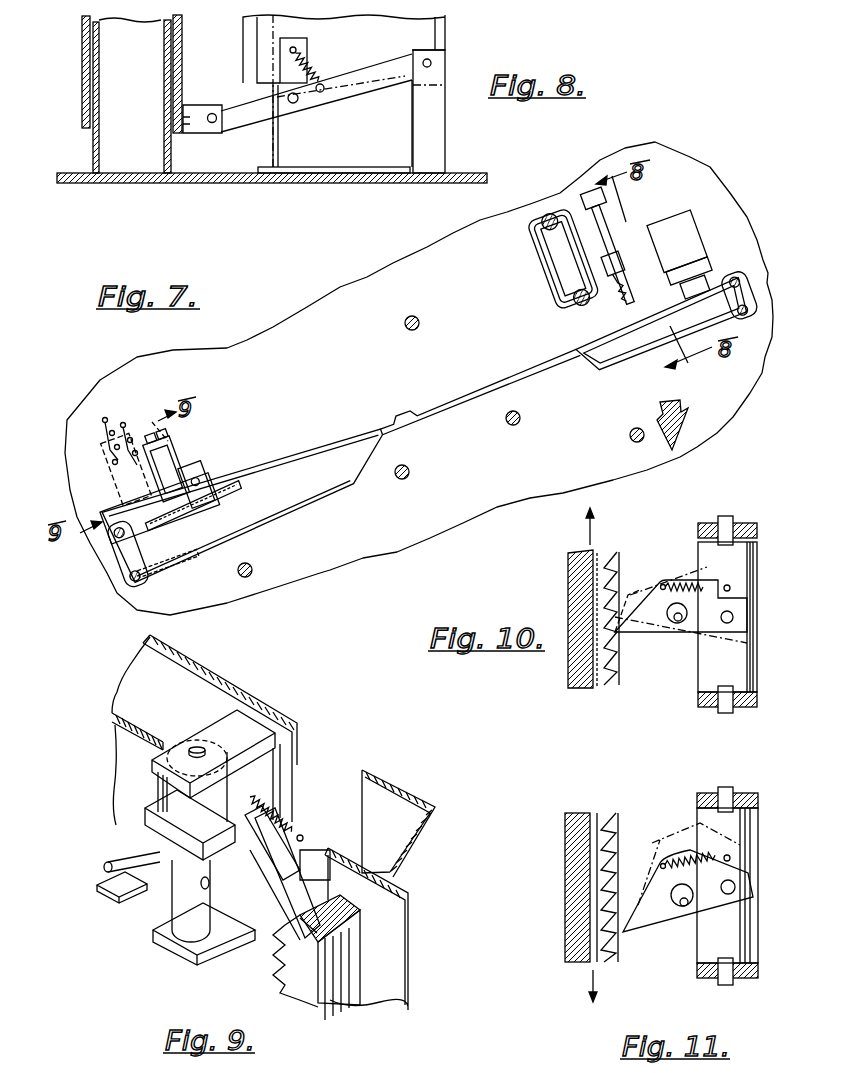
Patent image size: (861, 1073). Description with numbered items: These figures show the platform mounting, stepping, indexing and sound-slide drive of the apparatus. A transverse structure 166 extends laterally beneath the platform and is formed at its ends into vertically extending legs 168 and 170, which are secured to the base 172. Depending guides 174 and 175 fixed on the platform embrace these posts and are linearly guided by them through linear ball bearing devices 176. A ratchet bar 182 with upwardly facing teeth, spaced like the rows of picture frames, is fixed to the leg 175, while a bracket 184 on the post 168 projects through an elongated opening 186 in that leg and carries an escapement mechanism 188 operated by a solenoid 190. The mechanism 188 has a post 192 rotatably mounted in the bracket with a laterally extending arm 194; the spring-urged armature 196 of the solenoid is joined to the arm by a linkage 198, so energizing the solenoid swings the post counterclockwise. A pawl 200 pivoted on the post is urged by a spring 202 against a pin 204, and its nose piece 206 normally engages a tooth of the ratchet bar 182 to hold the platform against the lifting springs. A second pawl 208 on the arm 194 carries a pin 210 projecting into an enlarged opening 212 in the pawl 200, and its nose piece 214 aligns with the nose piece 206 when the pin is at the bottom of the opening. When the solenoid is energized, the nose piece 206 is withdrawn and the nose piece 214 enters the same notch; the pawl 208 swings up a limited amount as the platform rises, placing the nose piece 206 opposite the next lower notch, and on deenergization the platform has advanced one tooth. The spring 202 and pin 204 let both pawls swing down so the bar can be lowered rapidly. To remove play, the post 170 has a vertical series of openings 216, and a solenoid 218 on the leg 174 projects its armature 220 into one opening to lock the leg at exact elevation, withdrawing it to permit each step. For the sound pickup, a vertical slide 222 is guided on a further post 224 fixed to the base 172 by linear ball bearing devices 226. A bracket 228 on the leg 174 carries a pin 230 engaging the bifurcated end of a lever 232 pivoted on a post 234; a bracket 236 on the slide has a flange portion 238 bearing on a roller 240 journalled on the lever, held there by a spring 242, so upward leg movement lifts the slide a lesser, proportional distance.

In FIG. 7, the transverse structure 166 is at (450, 402).
In FIG. 7, the leg 168 is at (240, 530).
In FIG. 9, the leg 168 is at (405, 817).
In FIG. 8, the leg 170 is at (93, 142).
In FIG. 7, the leg 170 is at (588, 366).
In FIG. 8, the base 172 is at (228, 183).
In FIG. 7, the base 172 is at (376, 353).
In FIG. 8, the guide 174 is at (83, 66).
In FIG. 7, the guide 174 is at (650, 365).
In FIG. 7, the guide 175 is at (150, 577).
In FIG. 9, the guide 175 is at (395, 982).
In FIG. 7, the linear ball bearing devices 176 is at (117, 560).
In FIG. 7, the ratchet bar 182 is at (147, 522).
In FIG. 10, the ratchet bar 182 is at (570, 567).
In FIG. 11, the ratchet bar 182 is at (573, 840).
In FIG. 9, the ratchet bar 182 is at (300, 1010).
In FIG. 7, the bracket 184 is at (215, 487).
In FIG. 10, the bracket 184 is at (747, 523).
In FIG. 11, the bracket 184 is at (745, 793).
In FIG. 9, the bracket 184 is at (218, 732).
In FIG. 9, the elongated opening 186 is at (313, 850).
In FIG. 7, the escapement mechanism 188 is at (212, 458).
In FIG. 9, the escapement mechanism 188 is at (133, 821).
In FIG. 7, the solenoid 190 is at (112, 473).
In FIG. 10, the post 192 is at (750, 558).
In FIG. 11, the post 192 is at (758, 818).
In FIG. 9, the post 192 is at (143, 818).
In FIG. 7, the arm 194 is at (187, 463).
In FIG. 9, the arm 194 is at (104, 866).
In FIG. 7, the armature 196 is at (150, 450).
In FIG. 7, the linkage 198 is at (180, 443).
In FIG. 9, the linkage 198 is at (110, 897).
In FIG. 10, the pawl 200 is at (745, 633).
In FIG. 11, the pawl 200 is at (757, 897).
In FIG. 9, the pawl 200 is at (290, 830).
In FIG. 10, the spring 202 is at (705, 582).
In FIG. 11, the spring 202 is at (682, 858).
In FIG. 9, the spring 202 is at (280, 817).
In FIG. 10, the pin 204 is at (733, 593).
In FIG. 11, the pin 204 is at (730, 862).
In FIG. 9, the pin 204 is at (250, 783).
In FIG. 10, the nose piece 206 is at (628, 637).
In FIG. 11, the nose piece 206 is at (643, 907).
In FIG. 9, the nose piece 206 is at (277, 887).
In FIG. 10, the second pawl 208 is at (673, 570).
In FIG. 11, the second pawl 208 is at (700, 823).
In FIG. 9, the second pawl 208 is at (183, 890).
In FIG. 10, the pin 210 is at (670, 623).
In FIG. 11, the pin 210 is at (682, 910).
In FIG. 9, the pin 210 is at (210, 850).
In FIG. 10, the opening 212 is at (683, 627).
In FIG. 11, the opening 212 is at (692, 897).
In FIG. 9, the opening 212 is at (210, 832).
In FIG. 10, the nose piece 214 is at (628, 590).
In FIG. 9, the nose piece 214 is at (270, 935).
In FIG. 7, the openings 216 is at (667, 310).
In FIG. 7, the solenoid 218 is at (709, 241).
In FIG. 7, the armature 220 is at (710, 257).
In FIG. 8, the vertical slide 222 is at (395, 26).
In FIG. 7, the vertical slide 222 is at (552, 272).
In FIG. 8, the post 224 is at (350, 160).
In FIG. 7, the post 224 is at (558, 293).
In FIG. 7, the linear ball bearing devices 226 is at (552, 220).
In FIG. 8, the bracket 228 is at (192, 133).
In FIG. 7, the bracket 228 is at (673, 247).
In FIG. 8, the pin 230 is at (214, 113).
In FIG. 8, the lever 232 is at (380, 86).
In FIG. 7, the lever 232 is at (627, 230).
In FIG. 8, the post 234 is at (433, 125).
In FIG. 7, the post 234 is at (597, 193).
In FIG. 8, the bracket 236 is at (305, 70).
In FIG. 8, the flange portion 238 is at (286, 60).
In FIG. 7, the flange portion 238 is at (615, 287).
In FIG. 8, the roller 240 is at (300, 110).
In FIG. 8, the spring 242 is at (322, 83).